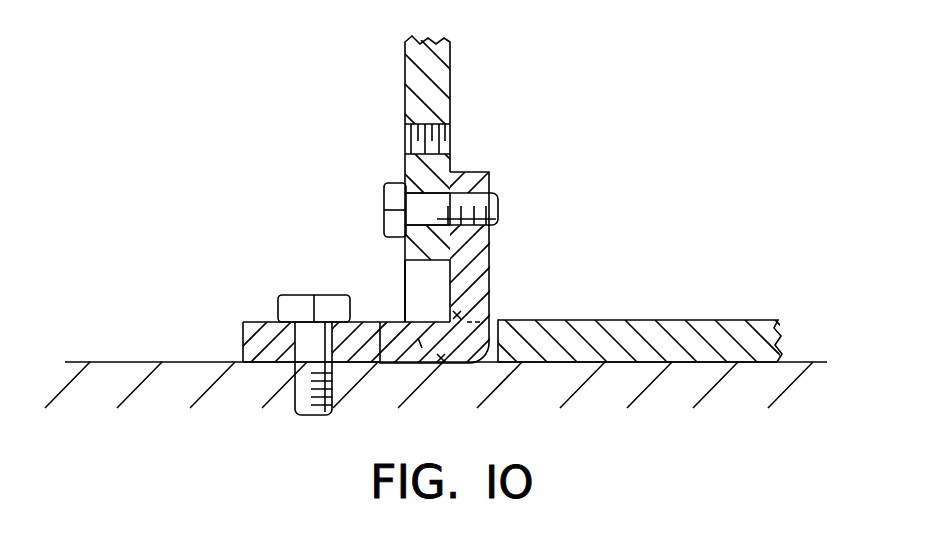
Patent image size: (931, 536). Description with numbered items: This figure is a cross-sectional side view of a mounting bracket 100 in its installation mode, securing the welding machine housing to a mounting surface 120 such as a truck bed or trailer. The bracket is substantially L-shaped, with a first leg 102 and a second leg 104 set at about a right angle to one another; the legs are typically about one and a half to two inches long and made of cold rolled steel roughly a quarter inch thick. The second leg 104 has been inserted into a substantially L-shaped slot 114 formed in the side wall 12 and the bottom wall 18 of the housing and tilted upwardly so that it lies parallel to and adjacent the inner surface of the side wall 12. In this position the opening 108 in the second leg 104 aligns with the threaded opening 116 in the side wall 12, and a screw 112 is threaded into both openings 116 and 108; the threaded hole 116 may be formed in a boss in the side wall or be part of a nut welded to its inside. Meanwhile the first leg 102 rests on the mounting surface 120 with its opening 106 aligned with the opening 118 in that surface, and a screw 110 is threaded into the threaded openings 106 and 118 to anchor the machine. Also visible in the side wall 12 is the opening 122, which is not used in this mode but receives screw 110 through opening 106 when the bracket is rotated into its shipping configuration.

The side wall 12 is at (415, 72).
The bottom wall 18 is at (660, 335).
The mounting bracket 100 is at (368, 323).
The first leg 102 is at (260, 355).
The second leg 104 is at (472, 252).
The opening 106 is at (320, 357).
The opening 108 is at (497, 197).
The fastening member 110 is at (297, 303).
The fastening member 112 is at (397, 193).
The L-shaped slot 114 is at (418, 280).
The threaded opening 116 is at (383, 217).
The opening 118 is at (327, 352).
The mounting surface 120 is at (124, 361).
The opening 122 is at (447, 138).